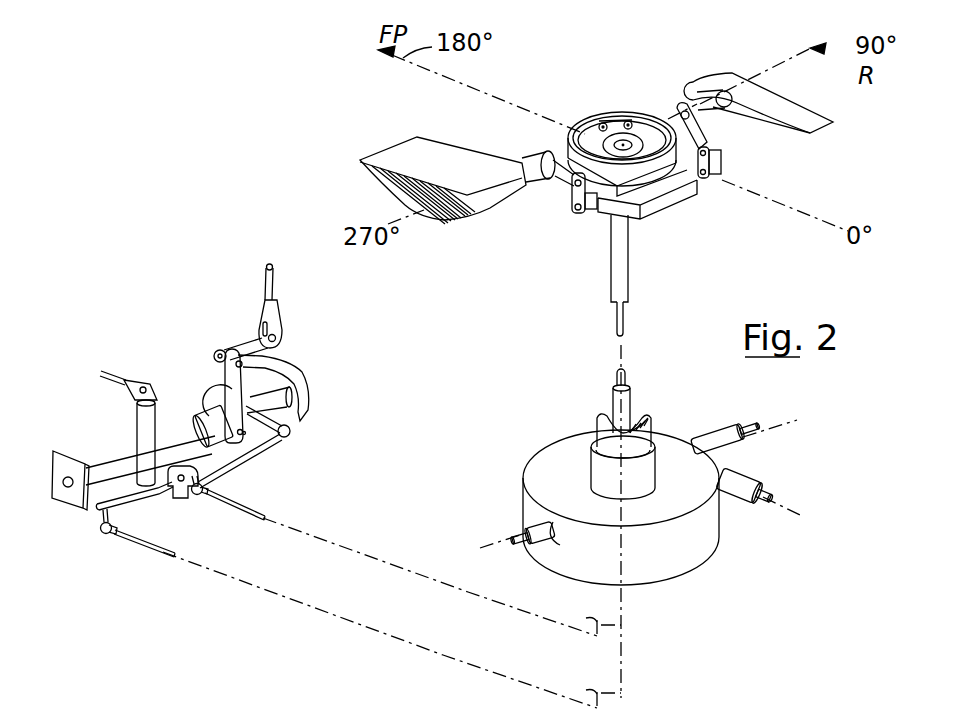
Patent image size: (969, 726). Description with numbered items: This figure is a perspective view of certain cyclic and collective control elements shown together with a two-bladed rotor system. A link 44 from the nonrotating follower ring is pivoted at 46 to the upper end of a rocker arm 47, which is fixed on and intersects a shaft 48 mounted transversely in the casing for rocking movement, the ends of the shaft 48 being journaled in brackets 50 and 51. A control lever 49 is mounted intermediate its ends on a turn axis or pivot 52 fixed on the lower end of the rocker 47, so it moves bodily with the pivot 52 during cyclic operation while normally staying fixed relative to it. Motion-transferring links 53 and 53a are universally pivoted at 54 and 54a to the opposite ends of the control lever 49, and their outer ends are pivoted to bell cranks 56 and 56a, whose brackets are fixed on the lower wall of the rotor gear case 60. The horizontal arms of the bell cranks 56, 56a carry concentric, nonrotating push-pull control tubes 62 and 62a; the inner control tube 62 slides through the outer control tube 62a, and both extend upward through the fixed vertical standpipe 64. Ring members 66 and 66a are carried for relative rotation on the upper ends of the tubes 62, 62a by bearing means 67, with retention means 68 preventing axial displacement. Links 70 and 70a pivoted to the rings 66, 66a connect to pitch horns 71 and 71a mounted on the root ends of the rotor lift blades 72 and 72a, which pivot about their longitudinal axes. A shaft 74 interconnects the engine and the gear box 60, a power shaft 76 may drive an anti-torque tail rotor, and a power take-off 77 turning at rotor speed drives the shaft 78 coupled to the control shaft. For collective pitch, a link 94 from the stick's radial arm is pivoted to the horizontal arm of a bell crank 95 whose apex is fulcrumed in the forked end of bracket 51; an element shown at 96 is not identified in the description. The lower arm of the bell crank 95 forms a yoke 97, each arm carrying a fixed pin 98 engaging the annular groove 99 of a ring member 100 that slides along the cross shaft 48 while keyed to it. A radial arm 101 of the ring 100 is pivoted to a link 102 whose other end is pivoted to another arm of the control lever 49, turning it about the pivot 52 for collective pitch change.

The link 44 is at (113, 370).
The pivot 46 is at (128, 392).
The rocker arm 47 is at (137, 430).
The shaft 48 is at (116, 468).
The control lever 49 is at (168, 494).
The bracket 50 is at (62, 497).
The bracket 51 is at (304, 376).
The turn axis or pivot 52 is at (145, 485).
The motion-transferring link 53 is at (153, 558).
The motion-transferring link 53a is at (258, 510).
The universal pivot 54 is at (103, 535).
The universal pivot 54a is at (207, 490).
The bell crank 56 is at (570, 675).
The bell crank 56a is at (578, 608).
The rotor gear case 60 is at (672, 565).
The inner control tube 62 is at (625, 331).
The outer control tube 62a is at (625, 292).
The standpipe or housing 64 is at (645, 443).
The ring member 66 is at (584, 122).
The ring member 66a is at (660, 200).
The bearing means 67 is at (648, 130).
The retention means 68 is at (604, 120).
The link 70 is at (573, 210).
The link 70a is at (717, 164).
The rotor blade pitch horn 71 is at (535, 160).
The rotor blade pitch horn 71a is at (687, 100).
The rotor lift blade 72 is at (425, 140).
The rotor lift blade 72a is at (740, 78).
The shaft 74 is at (760, 492).
The power shaft 76 is at (746, 430).
The power take-off 77 is at (548, 534).
The shaft 78 is at (510, 545).
The link 94 is at (265, 272).
The bell crank 95 is at (222, 363).
The hinge 96 is at (220, 350).
The yoke 97 is at (244, 400).
The fixed pin 98 is at (245, 434).
The annular groove 99 is at (209, 408).
The ring member 100 is at (201, 424).
The radial arm 101 is at (292, 429).
The link 102 is at (286, 440).